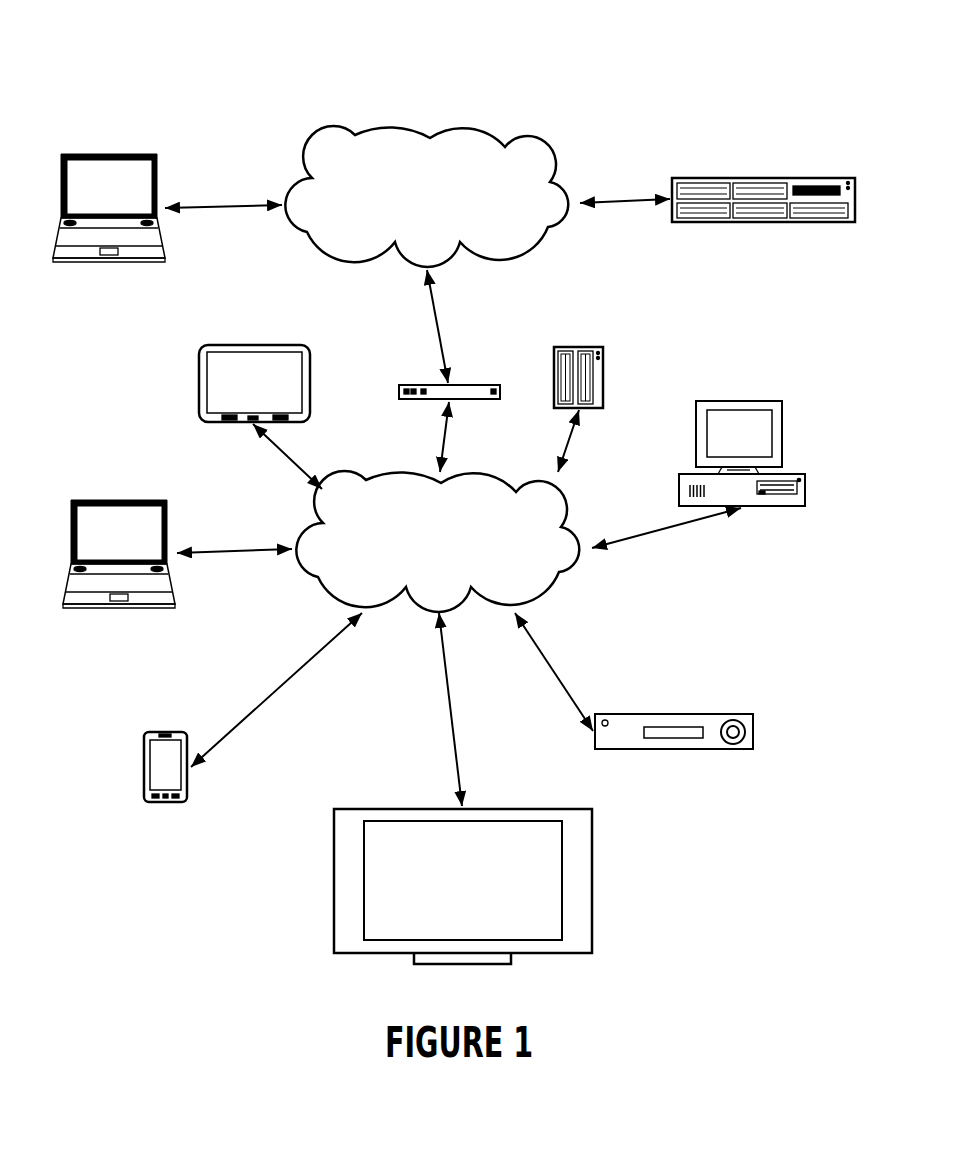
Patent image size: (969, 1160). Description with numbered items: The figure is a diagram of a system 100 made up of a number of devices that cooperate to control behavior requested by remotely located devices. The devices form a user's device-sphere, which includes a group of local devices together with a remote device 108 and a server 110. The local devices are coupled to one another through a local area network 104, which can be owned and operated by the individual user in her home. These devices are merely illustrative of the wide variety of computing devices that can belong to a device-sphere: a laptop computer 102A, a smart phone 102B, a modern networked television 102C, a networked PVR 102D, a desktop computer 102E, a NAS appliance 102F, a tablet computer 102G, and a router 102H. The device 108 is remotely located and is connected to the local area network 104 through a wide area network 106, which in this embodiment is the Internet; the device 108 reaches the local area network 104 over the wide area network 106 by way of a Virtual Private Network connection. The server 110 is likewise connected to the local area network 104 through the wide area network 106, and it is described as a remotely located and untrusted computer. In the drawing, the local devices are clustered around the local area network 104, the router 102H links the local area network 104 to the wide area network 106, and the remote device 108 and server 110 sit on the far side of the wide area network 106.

The system 100 is at (647, 62).
The local area network 104 is at (437, 541).
The wide area network 106 is at (426, 196).
The device 108 is at (108, 153).
The server 110 is at (764, 177).
The laptop computer 102A is at (118, 499).
The smart phone 102B is at (164, 732).
The networked television 102C is at (593, 887).
The networked PVR 102D is at (672, 713).
The desktop computer 102E is at (741, 401).
The NAS appliance 102F is at (605, 378).
The tablet computer 102G is at (312, 385).
The router 102H is at (501, 391).